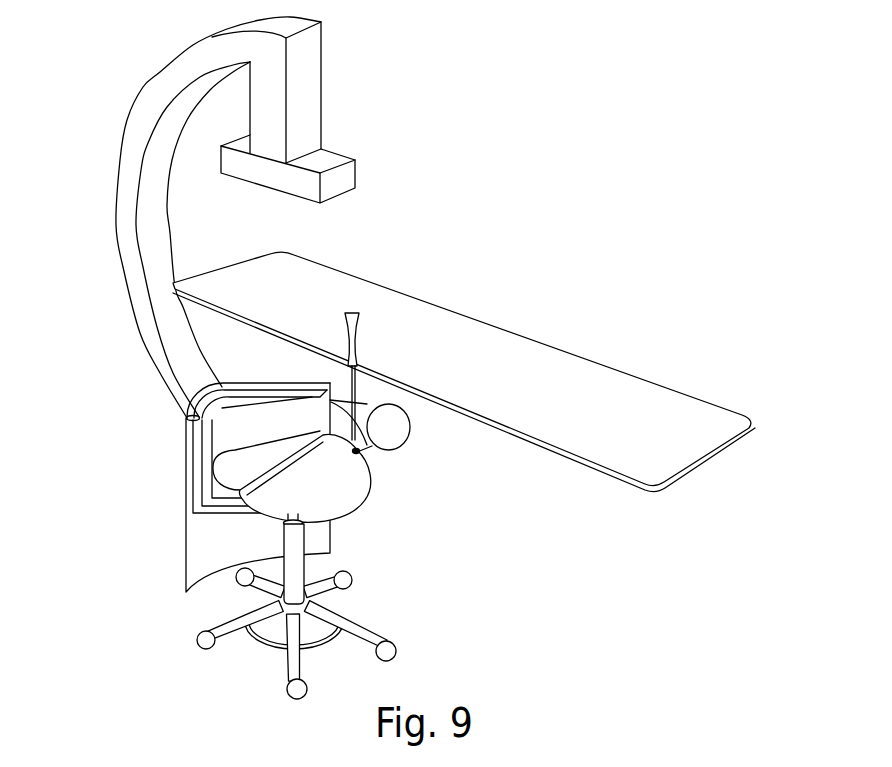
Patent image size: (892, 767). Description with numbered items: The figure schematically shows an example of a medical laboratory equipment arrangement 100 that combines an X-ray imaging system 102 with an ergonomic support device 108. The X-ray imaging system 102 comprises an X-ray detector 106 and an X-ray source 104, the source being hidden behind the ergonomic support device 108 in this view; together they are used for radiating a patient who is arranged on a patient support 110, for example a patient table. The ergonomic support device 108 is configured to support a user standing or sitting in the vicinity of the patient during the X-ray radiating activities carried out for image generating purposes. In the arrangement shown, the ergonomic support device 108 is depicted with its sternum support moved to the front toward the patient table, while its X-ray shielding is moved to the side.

The medical laboratory equipment arrangement 100 is at (434, 358).
The X-ray imaging system 102 is at (350, 92).
The X-ray source 104 is at (168, 420).
The X-ray detector 106 is at (345, 182).
The ergonomic support device 108 is at (387, 523).
The patient support 110 is at (700, 417).